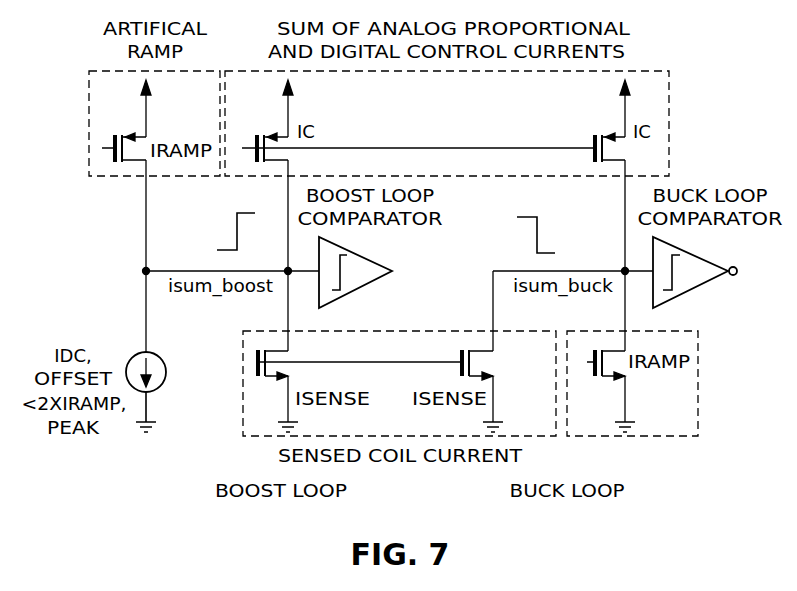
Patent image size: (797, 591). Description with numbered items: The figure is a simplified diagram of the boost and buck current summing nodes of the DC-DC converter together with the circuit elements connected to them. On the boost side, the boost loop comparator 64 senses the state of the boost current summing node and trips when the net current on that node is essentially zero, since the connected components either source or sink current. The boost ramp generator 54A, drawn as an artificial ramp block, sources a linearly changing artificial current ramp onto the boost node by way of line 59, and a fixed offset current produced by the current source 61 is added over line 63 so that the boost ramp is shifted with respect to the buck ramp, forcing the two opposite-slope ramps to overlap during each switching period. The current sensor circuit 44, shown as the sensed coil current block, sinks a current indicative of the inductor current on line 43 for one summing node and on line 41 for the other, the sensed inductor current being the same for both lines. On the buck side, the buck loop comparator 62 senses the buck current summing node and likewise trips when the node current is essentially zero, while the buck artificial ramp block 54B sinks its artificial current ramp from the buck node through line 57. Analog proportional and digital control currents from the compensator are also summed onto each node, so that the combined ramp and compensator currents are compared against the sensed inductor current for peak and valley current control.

The boost ramp generator 54A is at (89, 96).
The line 59 is at (146, 206).
The boost loop comparator 64 is at (392, 268).
The line 63 is at (146, 318).
The current source 61 is at (160, 357).
The line 41 is at (288, 308).
The current sensor circuit 44 is at (243, 413).
The line 43 is at (493, 304).
The buck loop comparator 62 is at (708, 258).
The line 57 is at (625, 318).
The buck ramp generator 54B is at (698, 380).